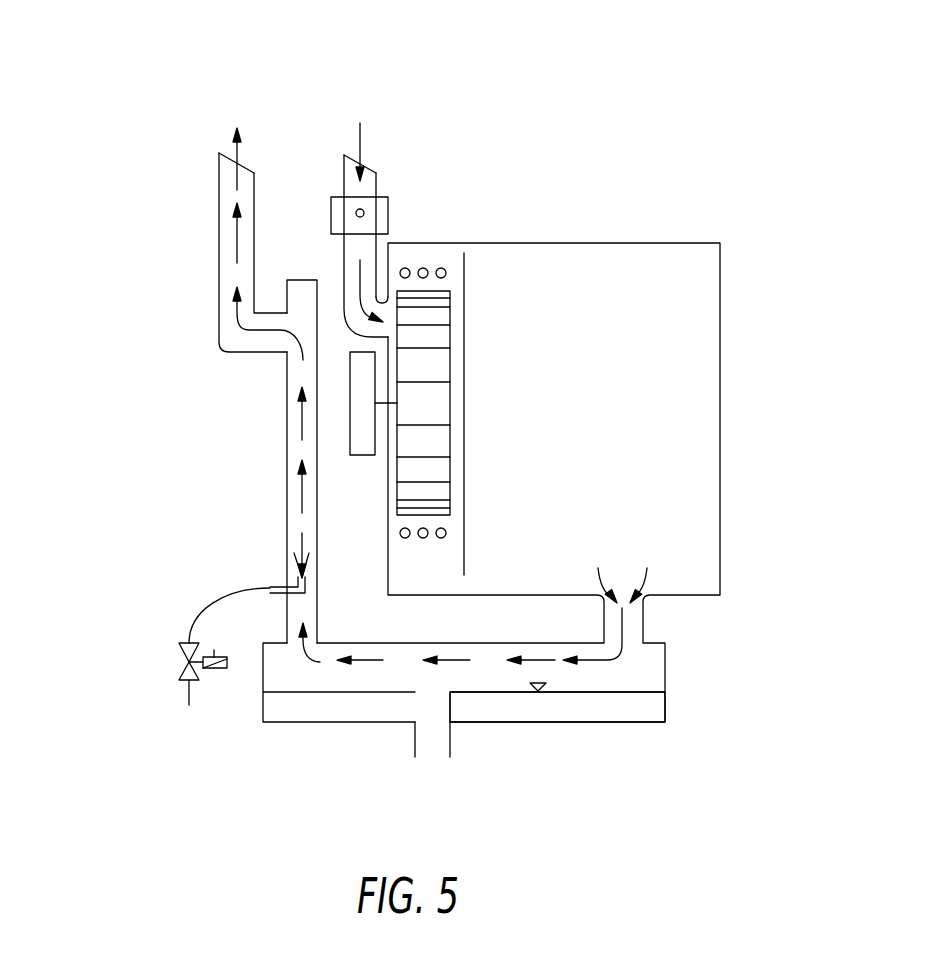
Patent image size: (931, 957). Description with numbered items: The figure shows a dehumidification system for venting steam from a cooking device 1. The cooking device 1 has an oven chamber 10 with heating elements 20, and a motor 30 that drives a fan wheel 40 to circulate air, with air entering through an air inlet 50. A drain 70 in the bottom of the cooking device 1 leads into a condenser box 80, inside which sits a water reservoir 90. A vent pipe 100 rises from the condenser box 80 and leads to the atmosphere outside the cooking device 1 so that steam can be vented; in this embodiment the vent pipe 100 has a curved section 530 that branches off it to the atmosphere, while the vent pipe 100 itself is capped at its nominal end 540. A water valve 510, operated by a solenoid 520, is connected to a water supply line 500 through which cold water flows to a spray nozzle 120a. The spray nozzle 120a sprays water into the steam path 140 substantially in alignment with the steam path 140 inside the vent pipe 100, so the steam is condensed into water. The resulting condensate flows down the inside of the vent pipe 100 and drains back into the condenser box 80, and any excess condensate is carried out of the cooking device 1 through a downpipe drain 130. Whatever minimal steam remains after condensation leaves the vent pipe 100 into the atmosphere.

The cooking device 1 is at (654, 196).
The oven chamber 10 is at (683, 280).
The heating elements 20 is at (422, 270).
The motor 30 is at (363, 378).
The fan wheel 40 is at (412, 442).
The air inlet 50 is at (367, 176).
The drain 70 is at (638, 596).
The condenser box 80 is at (357, 213).
The water reservoir 90 is at (640, 708).
The vent pipe 100 is at (298, 537).
The spray nozzle 120a is at (270, 587).
The downpipe drain 130 is at (433, 737).
The steam path 140 is at (375, 662).
The water supply line 500 is at (200, 613).
The water valve 510 is at (188, 661).
The solenoid 520 is at (218, 670).
The curved section 530 is at (233, 332).
The nominal end 540 is at (307, 280).